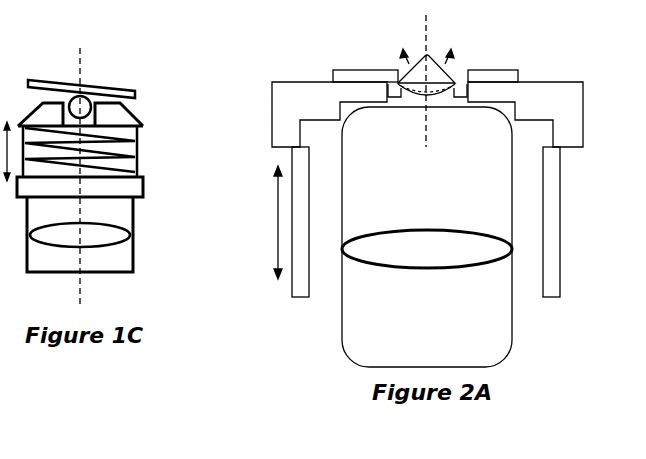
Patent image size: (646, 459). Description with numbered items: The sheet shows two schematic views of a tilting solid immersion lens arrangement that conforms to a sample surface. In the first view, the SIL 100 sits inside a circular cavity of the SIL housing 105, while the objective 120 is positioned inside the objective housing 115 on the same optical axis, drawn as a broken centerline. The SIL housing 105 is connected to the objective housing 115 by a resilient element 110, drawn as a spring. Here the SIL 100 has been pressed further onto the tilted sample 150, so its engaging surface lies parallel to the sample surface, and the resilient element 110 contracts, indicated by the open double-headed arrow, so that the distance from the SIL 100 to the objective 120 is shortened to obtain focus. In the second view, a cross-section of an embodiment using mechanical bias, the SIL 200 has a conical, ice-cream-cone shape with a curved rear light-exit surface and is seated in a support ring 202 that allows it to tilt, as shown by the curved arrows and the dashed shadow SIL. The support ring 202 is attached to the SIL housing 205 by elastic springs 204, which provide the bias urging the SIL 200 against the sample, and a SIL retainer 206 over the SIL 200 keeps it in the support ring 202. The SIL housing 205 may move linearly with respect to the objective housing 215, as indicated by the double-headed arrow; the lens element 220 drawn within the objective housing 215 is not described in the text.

In FIG. 1C, the SIL 100 is at (85, 85).
In FIG. 1C, the SIL housing 105 is at (105, 115).
In FIG. 1C, the resilient element 110 is at (103, 150).
In FIG. 1C, the objective housing 115 is at (103, 190).
In FIG. 1C, the objective 120 is at (102, 240).
In FIG. 1C, the sample 150 is at (57, 82).
In FIG. 2A, the SIL 200 is at (432, 57).
In FIG. 2A, the support ring 202 is at (452, 90).
In FIG. 2A, the springs 204 is at (472, 72).
In FIG. 2A, the SIL housing 205 is at (538, 87).
In FIG. 2A, the SIL retainer 206 is at (378, 70).
In FIG. 2A, the objective housing 215 is at (498, 338).
In FIG. 2A, the disc 220 is at (385, 230).